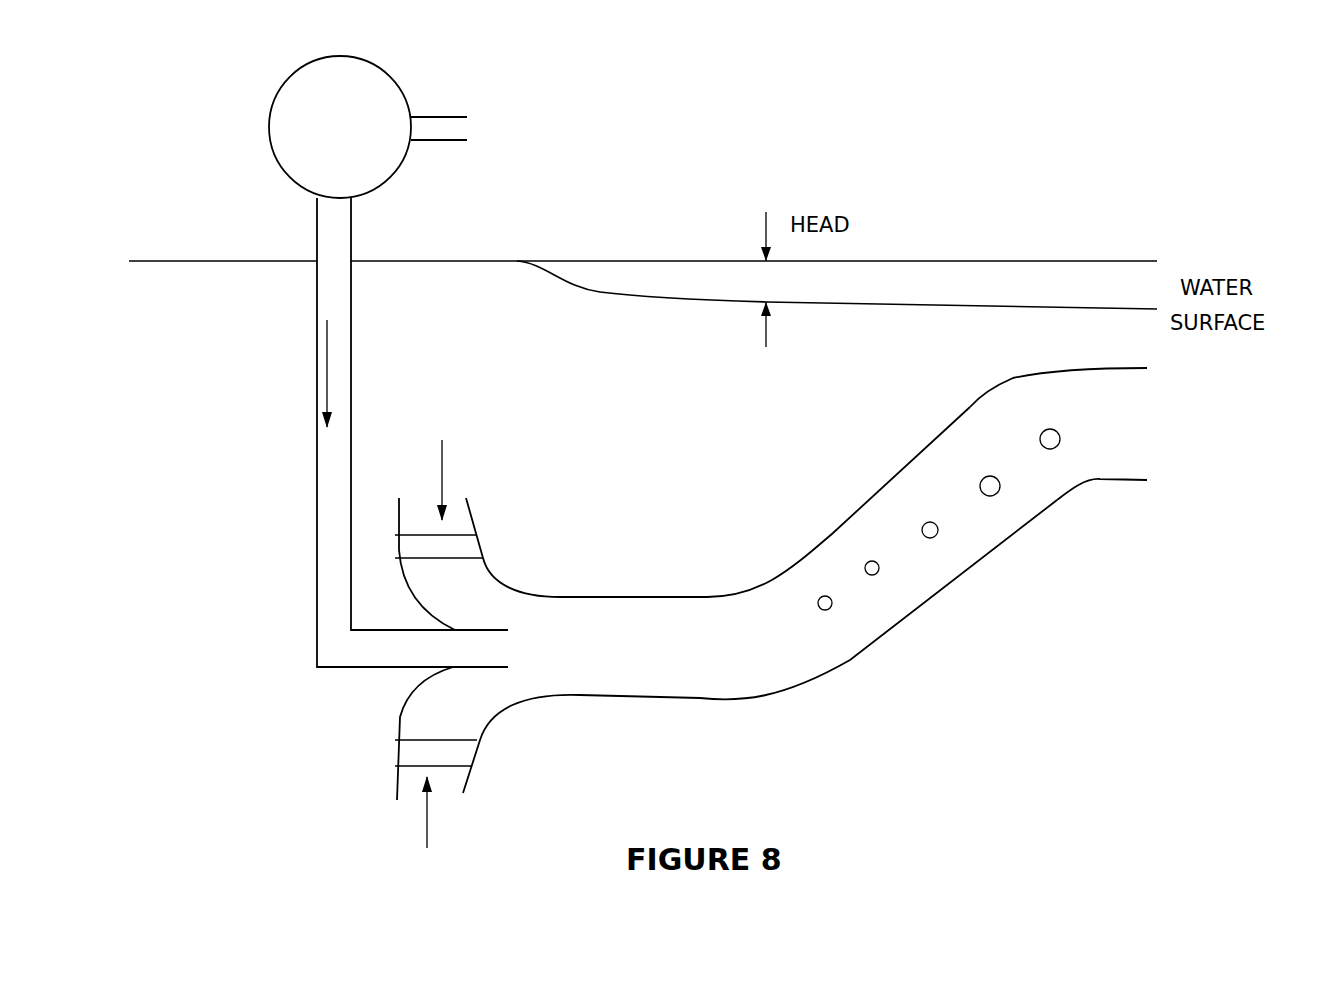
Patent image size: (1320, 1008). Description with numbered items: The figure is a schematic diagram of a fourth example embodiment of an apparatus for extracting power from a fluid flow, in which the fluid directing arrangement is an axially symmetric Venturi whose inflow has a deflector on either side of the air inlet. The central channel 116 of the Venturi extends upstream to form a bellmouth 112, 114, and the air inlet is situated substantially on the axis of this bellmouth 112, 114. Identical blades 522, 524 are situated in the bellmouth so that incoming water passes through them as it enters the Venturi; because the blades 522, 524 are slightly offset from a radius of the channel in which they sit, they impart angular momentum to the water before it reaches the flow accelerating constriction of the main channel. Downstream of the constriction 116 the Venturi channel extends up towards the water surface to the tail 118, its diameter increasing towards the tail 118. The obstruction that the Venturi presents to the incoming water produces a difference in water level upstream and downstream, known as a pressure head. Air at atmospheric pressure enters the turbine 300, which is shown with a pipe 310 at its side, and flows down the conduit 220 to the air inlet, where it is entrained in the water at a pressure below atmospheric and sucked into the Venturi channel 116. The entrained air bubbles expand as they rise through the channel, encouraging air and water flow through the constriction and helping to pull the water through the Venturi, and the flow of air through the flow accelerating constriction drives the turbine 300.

The turbine 300 is at (303, 68).
The tank inlet pipe 310 is at (441, 117).
The conduit 220 is at (366, 432).
The bellmouth 112 is at (466, 498).
The blade 522 is at (473, 543).
The central channel 116 is at (677, 597).
The tail 118 is at (1092, 480).
The blade 524 is at (407, 747).
The bellmouth 114 is at (465, 782).